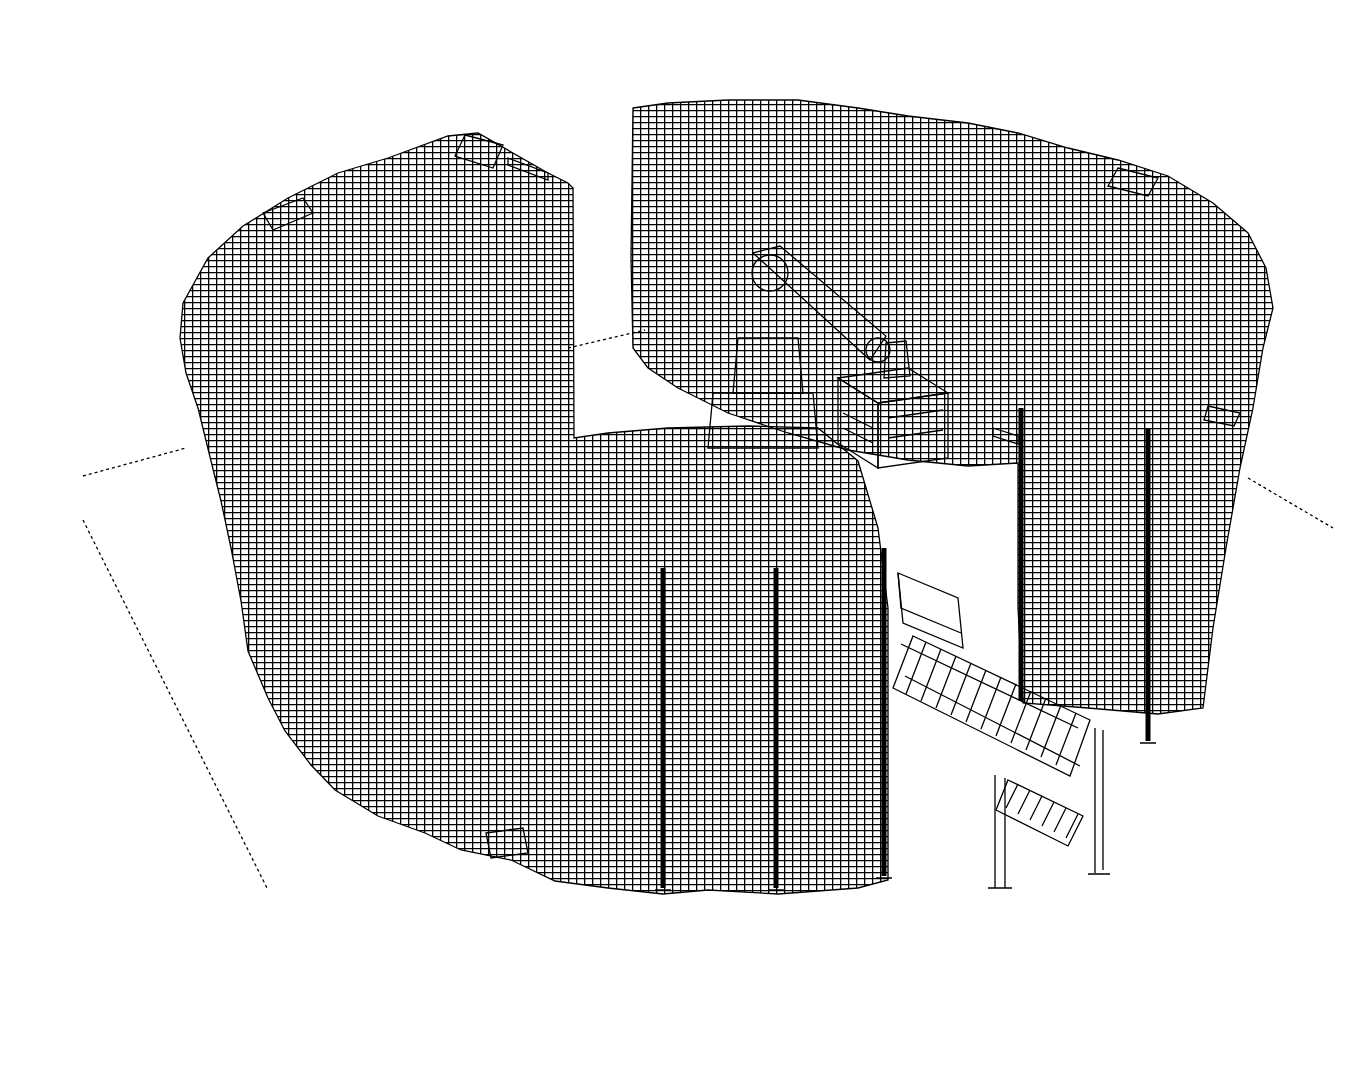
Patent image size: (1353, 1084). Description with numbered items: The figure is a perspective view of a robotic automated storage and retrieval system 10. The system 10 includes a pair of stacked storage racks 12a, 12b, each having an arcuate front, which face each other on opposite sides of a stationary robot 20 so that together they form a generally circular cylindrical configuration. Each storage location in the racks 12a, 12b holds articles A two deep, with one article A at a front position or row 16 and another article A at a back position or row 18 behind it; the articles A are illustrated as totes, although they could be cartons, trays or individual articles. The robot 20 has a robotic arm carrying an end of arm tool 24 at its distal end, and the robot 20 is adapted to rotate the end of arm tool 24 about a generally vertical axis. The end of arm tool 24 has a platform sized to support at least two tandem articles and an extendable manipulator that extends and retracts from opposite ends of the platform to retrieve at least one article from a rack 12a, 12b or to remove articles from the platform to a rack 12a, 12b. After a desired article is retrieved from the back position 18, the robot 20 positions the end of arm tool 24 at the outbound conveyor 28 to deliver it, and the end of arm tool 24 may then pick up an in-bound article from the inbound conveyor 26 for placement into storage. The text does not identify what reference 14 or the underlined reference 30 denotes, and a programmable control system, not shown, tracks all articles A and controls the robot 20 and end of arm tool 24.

The robotic automated storage and retrieval system 10 is at (1060, 96).
The stacked storage rack 12a is at (1226, 224).
The stacked storage rack 12b is at (384, 140).
The vertical upright post 14 is at (1238, 404).
The front position or row 16 is at (519, 150).
The back position or row 18 is at (470, 126).
The stationary robot 20 is at (881, 470).
The end of arm tool 24 is at (908, 448).
The inbound conveyor 26 is at (1038, 836).
The outbound conveyor 28 is at (1068, 710).
The central aisle 30 is at (583, 250).
The article A is at (268, 208).